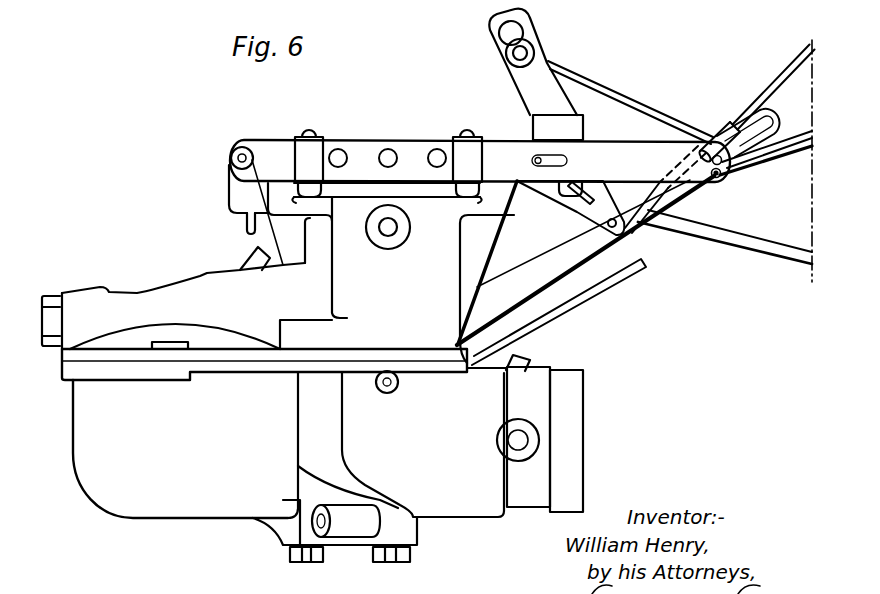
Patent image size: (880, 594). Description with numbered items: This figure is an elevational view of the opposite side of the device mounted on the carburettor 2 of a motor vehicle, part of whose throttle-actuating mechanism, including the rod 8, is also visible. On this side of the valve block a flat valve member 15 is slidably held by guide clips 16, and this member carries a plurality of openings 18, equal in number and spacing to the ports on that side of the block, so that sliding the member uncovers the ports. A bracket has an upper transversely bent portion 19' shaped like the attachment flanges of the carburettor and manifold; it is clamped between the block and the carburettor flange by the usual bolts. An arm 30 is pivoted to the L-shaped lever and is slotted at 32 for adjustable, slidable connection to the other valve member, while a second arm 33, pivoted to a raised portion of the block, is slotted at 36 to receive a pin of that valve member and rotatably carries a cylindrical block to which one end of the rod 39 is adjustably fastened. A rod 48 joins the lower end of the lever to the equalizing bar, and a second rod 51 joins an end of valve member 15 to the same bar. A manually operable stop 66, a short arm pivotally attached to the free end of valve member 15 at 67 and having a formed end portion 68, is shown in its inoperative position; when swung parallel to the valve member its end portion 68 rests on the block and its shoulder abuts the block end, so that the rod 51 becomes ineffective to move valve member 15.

The carburettor 2 is at (108, 482).
The rod 8 is at (790, 250).
The valve member 15 is at (503, 146).
The guide clips 16 is at (307, 150).
The openings 18 is at (340, 150).
The upper transversely bent portion 19' is at (386, 200).
The arm 30 is at (731, 121).
The slot 32 is at (755, 110).
The second arm 33 is at (560, 100).
The slot 36 is at (580, 203).
The rod 39 is at (627, 95).
The rod 48 is at (612, 284).
The second rod 51 is at (800, 131).
The manually operable stop 66 is at (229, 189).
The pivot 67 is at (231, 155).
The end portion 68 is at (243, 222).